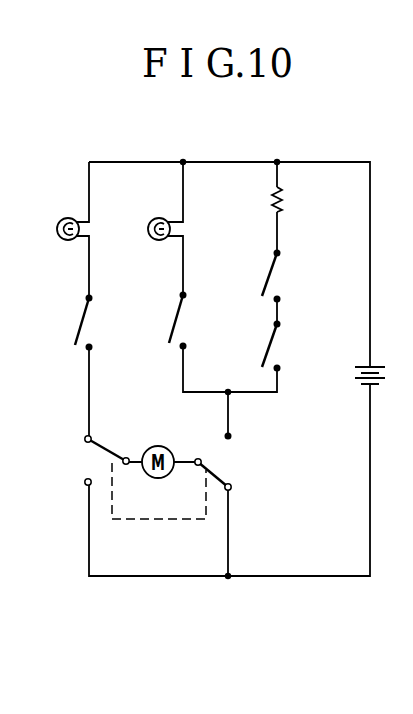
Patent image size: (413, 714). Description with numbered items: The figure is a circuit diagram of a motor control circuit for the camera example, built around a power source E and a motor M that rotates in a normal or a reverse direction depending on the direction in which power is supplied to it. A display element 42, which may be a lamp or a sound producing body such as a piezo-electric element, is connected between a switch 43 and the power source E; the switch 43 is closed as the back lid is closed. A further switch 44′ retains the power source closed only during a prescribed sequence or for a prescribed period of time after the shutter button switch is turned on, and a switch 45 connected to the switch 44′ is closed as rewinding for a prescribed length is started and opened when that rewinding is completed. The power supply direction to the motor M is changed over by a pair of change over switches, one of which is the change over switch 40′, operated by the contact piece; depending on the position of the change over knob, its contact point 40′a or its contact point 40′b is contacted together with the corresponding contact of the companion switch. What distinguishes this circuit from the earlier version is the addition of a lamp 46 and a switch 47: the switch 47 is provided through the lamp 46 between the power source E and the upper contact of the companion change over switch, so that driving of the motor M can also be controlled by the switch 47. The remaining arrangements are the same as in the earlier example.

The display element 42 is at (92, 230).
The lamp 46 is at (186, 230).
The switch 43 is at (97, 331).
The switch 47 is at (187, 331).
The switch 44′ is at (281, 283).
The switch 45 is at (283, 356).
The power source E is at (378, 374).
The change over switch 40′ is at (126, 456).
The contact point 40′a is at (84, 438).
The contact point 40′b is at (85, 482).